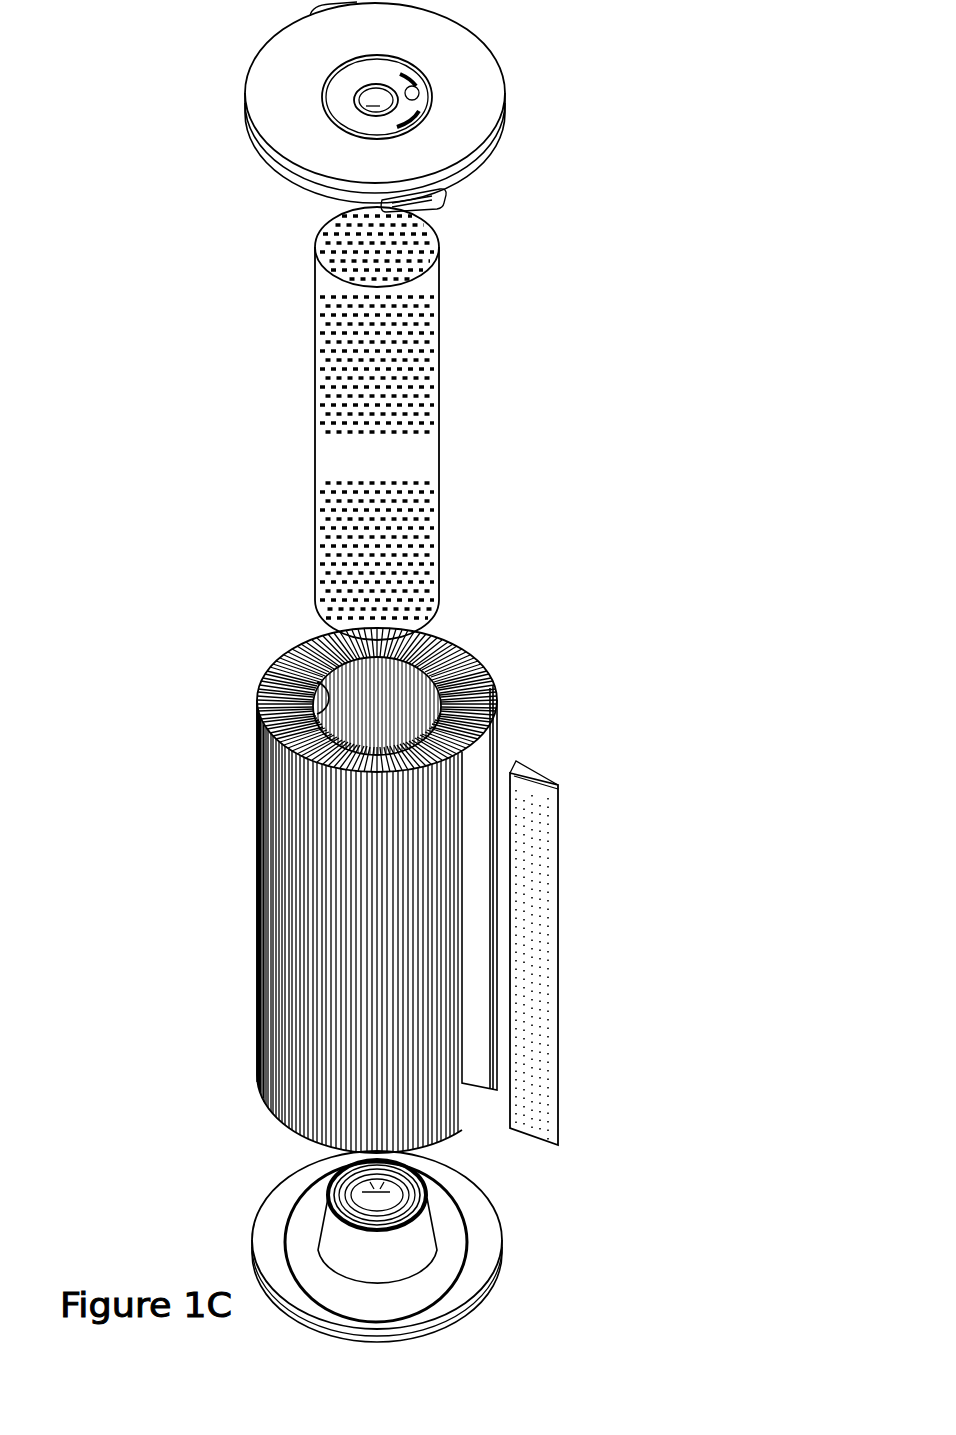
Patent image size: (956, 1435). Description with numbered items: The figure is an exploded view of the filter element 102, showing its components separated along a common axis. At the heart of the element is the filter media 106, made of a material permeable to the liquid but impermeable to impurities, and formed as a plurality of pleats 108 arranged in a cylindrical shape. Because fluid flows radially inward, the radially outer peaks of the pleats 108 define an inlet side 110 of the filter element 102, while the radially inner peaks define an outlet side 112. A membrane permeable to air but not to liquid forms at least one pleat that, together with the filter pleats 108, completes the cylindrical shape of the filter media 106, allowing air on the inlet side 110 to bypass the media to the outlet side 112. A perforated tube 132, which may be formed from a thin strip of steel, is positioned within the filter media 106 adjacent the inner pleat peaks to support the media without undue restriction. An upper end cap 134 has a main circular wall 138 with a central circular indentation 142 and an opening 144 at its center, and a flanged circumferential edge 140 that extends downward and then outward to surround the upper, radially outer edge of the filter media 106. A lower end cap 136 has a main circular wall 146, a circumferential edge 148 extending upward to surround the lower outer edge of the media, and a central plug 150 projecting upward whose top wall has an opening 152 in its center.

The filter element 102 is at (502, 311).
The filter media 106 is at (443, 634).
The pleats 108 is at (483, 660).
The inlet side 110 is at (288, 900).
The outlet side 112 is at (340, 677).
The perforated tube 132 is at (423, 438).
The upper end cap 134 is at (511, 57).
The lower end cap 136 is at (522, 1234).
The main circular wall 138 is at (463, 110).
The flanged circumferential edge 140 is at (475, 160).
The central circular indentation 142 is at (380, 75).
The opening 144 is at (373, 107).
The main circular wall 146 is at (452, 1292).
The circumferential edge 148 is at (427, 1320).
The central plug 150 is at (420, 1223).
The opening 152 is at (370, 1193).